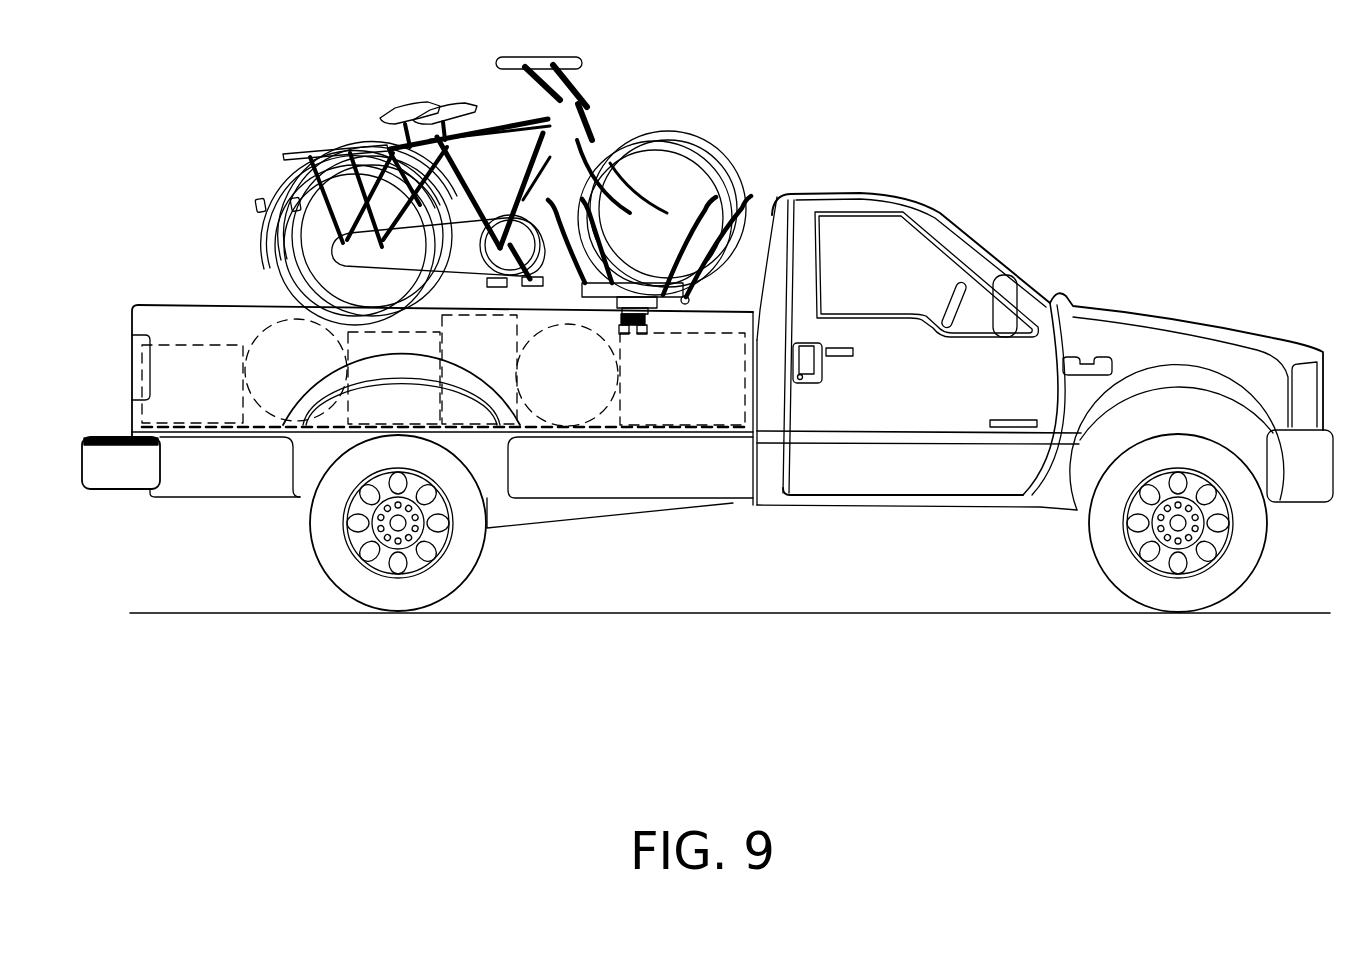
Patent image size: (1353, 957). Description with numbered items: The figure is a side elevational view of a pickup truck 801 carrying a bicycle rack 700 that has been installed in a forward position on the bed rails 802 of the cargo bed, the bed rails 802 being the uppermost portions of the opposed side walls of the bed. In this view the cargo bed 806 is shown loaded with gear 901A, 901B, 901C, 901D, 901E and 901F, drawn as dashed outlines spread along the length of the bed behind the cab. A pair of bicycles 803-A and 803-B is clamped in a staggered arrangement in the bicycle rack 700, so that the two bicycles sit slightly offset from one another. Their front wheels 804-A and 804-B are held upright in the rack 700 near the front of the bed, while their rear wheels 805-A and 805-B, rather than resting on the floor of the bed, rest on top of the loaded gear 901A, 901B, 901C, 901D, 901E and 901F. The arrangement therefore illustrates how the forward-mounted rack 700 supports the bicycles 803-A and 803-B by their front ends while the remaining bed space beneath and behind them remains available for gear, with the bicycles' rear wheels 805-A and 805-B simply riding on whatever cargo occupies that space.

The pickup truck 801 is at (703, 371).
The bed rails 802 is at (163, 298).
The bicycle 803-A is at (373, 106).
The bicycle 803-B is at (448, 88).
The front wheel of first bicycle 804-A is at (623, 137).
The front wheel of second bicycle 804-B is at (730, 168).
The rear wheel of first bicycle 805-A is at (278, 262).
The rear wheel of second bicycle 805-B is at (312, 283).
The bicycle rack 700 is at (665, 340).
The truck bed rail / mounting line 806 is at (590, 440).
The gear 901A is at (192, 384).
The gear 901B is at (296, 370).
The gear 901C is at (394, 378).
The gear 901D is at (479, 369).
The gear 901E is at (567, 375).
The gear 901F is at (682, 379).